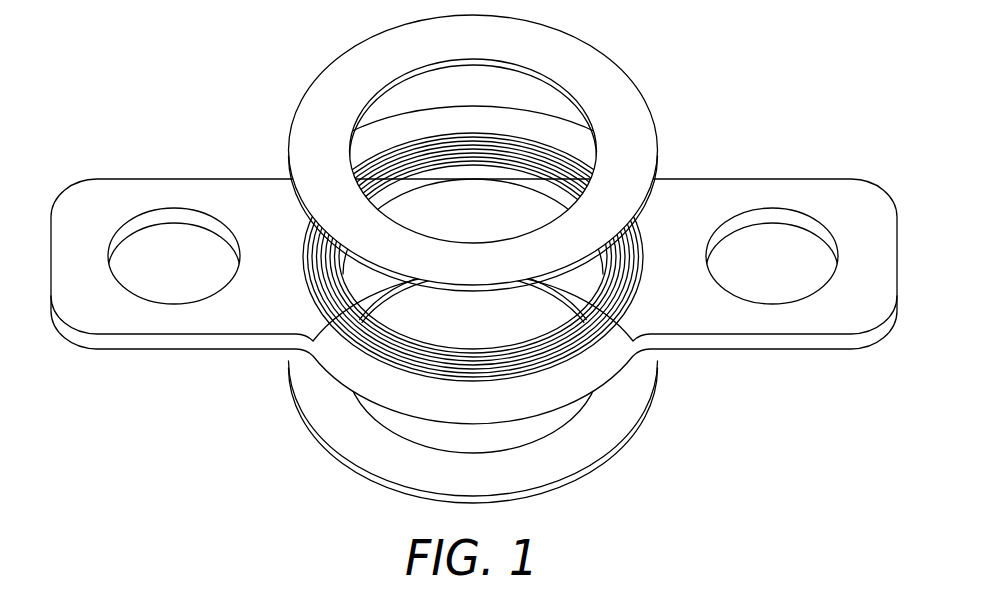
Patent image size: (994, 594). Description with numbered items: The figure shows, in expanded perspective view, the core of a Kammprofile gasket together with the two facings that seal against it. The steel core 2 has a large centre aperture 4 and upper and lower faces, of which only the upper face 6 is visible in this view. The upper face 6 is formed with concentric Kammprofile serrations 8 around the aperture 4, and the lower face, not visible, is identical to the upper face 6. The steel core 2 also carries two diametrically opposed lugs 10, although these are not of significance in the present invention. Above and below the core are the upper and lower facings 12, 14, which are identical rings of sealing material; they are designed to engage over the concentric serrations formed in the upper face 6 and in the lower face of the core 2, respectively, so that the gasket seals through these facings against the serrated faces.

The steel core 2 is at (690, 183).
The aperture 4 is at (483, 333).
The upper face 6 is at (682, 301).
The serrations 8 is at (341, 322).
The lugs 10 is at (117, 316).
The upper facing 12 is at (618, 69).
The lower facing 14 is at (624, 436).